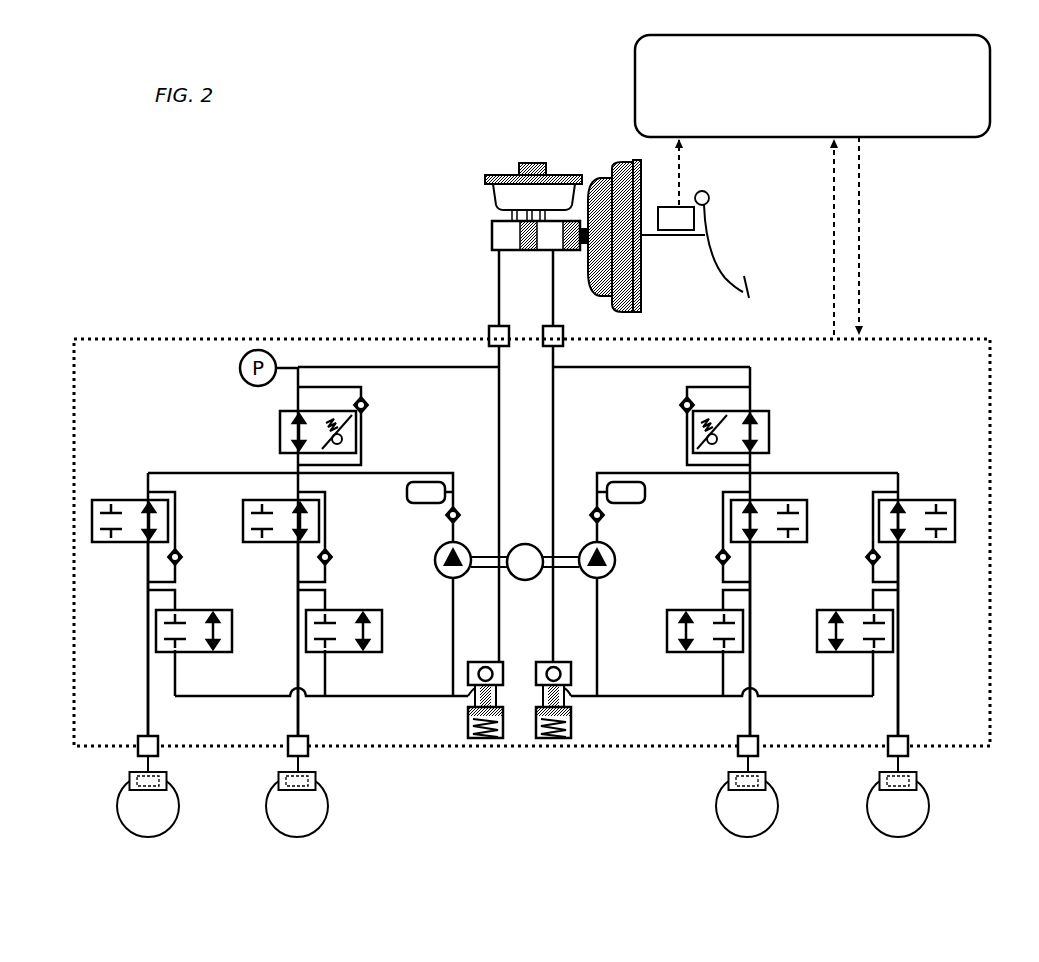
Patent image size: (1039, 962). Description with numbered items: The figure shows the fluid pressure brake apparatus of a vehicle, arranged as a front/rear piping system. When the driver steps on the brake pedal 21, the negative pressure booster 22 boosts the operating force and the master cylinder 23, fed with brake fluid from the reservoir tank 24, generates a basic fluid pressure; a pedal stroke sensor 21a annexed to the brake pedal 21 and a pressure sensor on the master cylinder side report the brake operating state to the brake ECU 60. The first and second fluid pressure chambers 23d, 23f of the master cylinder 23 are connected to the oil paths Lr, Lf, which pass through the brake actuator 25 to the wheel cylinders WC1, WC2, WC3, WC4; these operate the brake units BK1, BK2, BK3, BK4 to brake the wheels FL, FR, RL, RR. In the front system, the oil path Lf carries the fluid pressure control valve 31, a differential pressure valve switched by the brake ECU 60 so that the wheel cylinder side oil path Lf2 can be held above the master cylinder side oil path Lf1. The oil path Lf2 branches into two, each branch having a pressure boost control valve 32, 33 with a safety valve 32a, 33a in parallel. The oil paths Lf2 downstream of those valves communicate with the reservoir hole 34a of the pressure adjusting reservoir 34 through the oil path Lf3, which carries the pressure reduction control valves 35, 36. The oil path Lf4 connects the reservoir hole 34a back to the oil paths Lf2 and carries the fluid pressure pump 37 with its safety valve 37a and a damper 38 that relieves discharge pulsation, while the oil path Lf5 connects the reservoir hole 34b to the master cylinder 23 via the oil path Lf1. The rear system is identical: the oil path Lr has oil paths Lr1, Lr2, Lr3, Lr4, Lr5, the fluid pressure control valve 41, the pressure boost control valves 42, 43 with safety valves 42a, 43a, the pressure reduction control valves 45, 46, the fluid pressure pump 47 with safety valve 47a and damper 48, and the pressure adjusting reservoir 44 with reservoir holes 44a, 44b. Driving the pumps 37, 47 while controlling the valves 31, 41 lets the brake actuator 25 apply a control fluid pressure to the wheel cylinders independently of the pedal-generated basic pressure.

The brake ECU 60 is at (990, 82).
The reservoir tank 24 is at (530, 162).
The master cylinder 23 is at (516, 236).
The first fluid pressure chamber 23d is at (548, 246).
The second fluid pressure chamber 23f is at (500, 238).
The negative pressure booster 22 is at (620, 185).
The brake pedal 21 is at (712, 250).
The pedal stroke sensor 21a is at (684, 212).
The brake actuator 25 is at (922, 334).
The fluid pressure control valve 31 is at (280, 437).
The pressure boost control valve 32 is at (123, 500).
The safety valve 32a is at (187, 550).
The pressure boost control valve 33 is at (243, 522).
The safety valve 33a is at (328, 551).
The pressure reduction control valve 35 is at (200, 610).
The pressure reduction control valve 36 is at (350, 610).
The fluid pressure pump 37 is at (433, 560).
The safety valve 37a is at (446, 515).
The damper 38 is at (407, 493).
The pressure adjusting reservoir 34 is at (487, 738).
The reservoir hole 34a is at (467, 693).
The reservoir hole 34b is at (497, 660).
The fluid pressure control valve 41 is at (770, 433).
The pressure boost control valve 42 is at (808, 513).
The safety valve 42a is at (717, 553).
The pressure boost control valve 43 is at (920, 493).
The safety valve 43a is at (867, 553).
The pressure reduction control valve 45 is at (702, 608).
The pressure reduction control valve 46 is at (853, 608).
The fluid pressure pump 47 is at (615, 555).
The safety valve 47a is at (604, 517).
The damper 48 is at (645, 488).
The pressure adjusting reservoir 44 is at (557, 738).
The reservoir hole 44a is at (573, 693).
The reservoir hole 44b is at (555, 660).
The oil path Lf is at (339, 356).
The oil path Lf1 is at (383, 365).
The oil path Lf2 is at (147, 565).
The oil path Lf3 is at (333, 700).
The oil path Lf4 is at (380, 470).
The oil path Lf5 is at (497, 418).
The oil path Lr is at (762, 375).
The oil path Lr1 is at (632, 362).
The oil path Lr2 is at (752, 565).
The oil path Lr3 is at (705, 700).
The oil path Lr4 is at (652, 468).
The oil path Lr5 is at (557, 420).
The wheel cylinder WC1 is at (130, 775).
The wheel cylinder WC2 is at (278, 775).
The wheel cylinder WC3 is at (728, 771).
The wheel cylinder WC4 is at (879, 768).
The brake unit BK1 is at (167, 778).
The brake unit BK2 is at (316, 780).
The brake unit BK3 is at (766, 776).
The brake unit BK4 is at (917, 775).
The front left wheel FL is at (175, 805).
The front right wheel FR is at (323, 803).
The rear left wheel RL is at (775, 800).
The rear right wheel RR is at (925, 800).